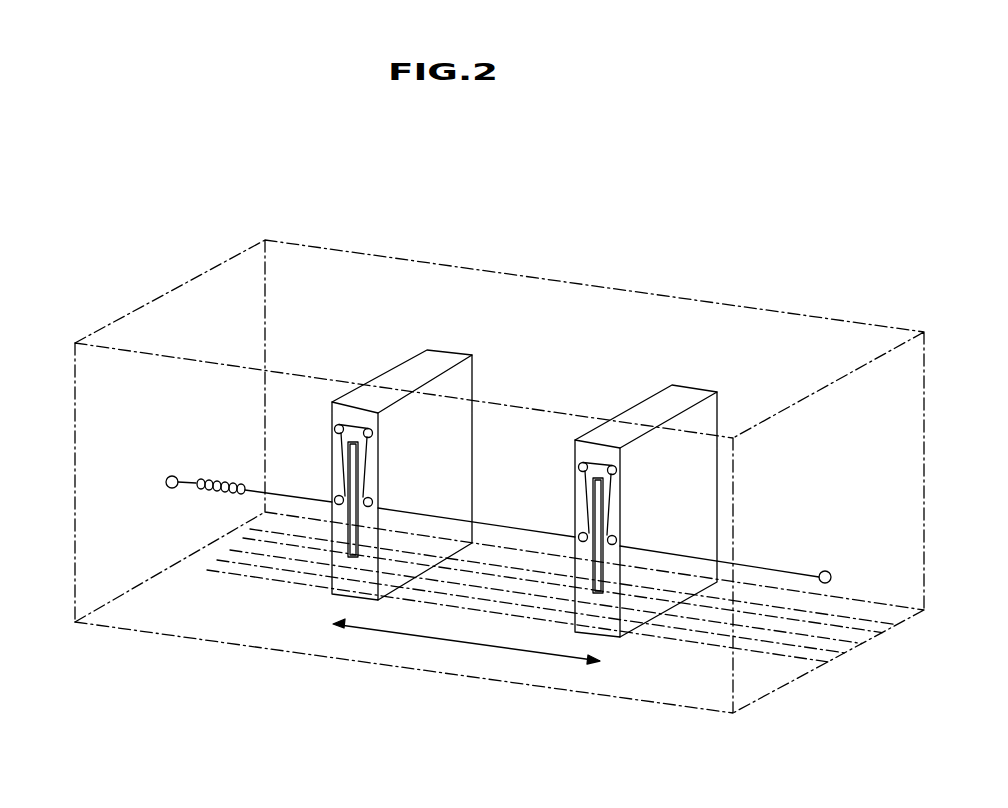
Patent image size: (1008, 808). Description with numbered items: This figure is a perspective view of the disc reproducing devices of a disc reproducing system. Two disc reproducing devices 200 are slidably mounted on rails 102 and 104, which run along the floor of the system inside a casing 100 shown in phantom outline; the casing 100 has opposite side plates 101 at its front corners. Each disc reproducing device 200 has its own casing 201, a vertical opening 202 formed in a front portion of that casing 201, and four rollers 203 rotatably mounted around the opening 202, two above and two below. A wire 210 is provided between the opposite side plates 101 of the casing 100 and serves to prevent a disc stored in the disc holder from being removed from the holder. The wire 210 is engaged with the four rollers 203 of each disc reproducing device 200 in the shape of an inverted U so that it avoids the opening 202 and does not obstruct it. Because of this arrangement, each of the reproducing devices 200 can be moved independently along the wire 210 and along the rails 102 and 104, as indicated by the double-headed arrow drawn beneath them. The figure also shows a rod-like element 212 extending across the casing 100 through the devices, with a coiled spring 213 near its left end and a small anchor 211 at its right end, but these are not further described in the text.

The casing 100 is at (575, 283).
The side plates 101 is at (73, 577).
The rail 102 is at (798, 653).
The rail 104 is at (847, 628).
The disc reproducing device 200 is at (365, 362).
The casing 201 is at (408, 373).
The vertical opening 202 is at (350, 540).
The rollers 203 is at (373, 433).
The wire 210 is at (438, 520).
The rod end / anchor 211 is at (788, 572).
The guide rod 212 is at (294, 495).
The spring 213 is at (213, 479).